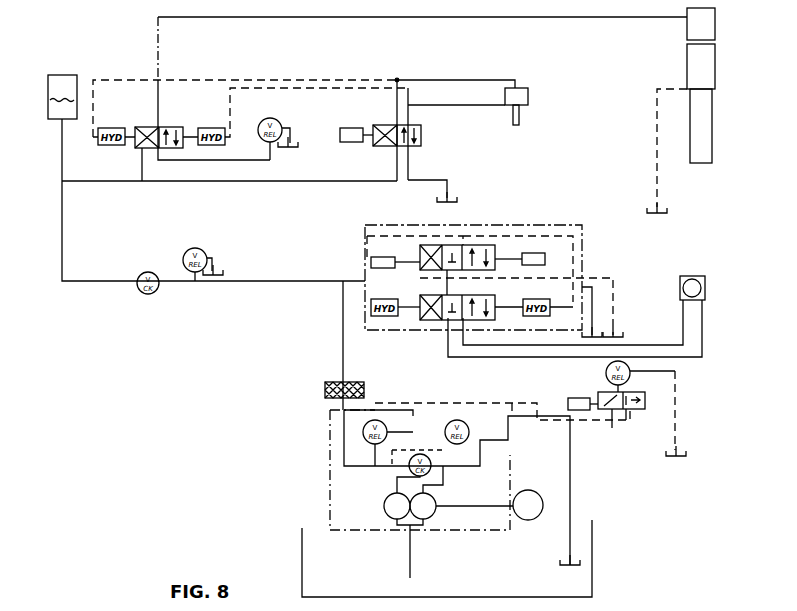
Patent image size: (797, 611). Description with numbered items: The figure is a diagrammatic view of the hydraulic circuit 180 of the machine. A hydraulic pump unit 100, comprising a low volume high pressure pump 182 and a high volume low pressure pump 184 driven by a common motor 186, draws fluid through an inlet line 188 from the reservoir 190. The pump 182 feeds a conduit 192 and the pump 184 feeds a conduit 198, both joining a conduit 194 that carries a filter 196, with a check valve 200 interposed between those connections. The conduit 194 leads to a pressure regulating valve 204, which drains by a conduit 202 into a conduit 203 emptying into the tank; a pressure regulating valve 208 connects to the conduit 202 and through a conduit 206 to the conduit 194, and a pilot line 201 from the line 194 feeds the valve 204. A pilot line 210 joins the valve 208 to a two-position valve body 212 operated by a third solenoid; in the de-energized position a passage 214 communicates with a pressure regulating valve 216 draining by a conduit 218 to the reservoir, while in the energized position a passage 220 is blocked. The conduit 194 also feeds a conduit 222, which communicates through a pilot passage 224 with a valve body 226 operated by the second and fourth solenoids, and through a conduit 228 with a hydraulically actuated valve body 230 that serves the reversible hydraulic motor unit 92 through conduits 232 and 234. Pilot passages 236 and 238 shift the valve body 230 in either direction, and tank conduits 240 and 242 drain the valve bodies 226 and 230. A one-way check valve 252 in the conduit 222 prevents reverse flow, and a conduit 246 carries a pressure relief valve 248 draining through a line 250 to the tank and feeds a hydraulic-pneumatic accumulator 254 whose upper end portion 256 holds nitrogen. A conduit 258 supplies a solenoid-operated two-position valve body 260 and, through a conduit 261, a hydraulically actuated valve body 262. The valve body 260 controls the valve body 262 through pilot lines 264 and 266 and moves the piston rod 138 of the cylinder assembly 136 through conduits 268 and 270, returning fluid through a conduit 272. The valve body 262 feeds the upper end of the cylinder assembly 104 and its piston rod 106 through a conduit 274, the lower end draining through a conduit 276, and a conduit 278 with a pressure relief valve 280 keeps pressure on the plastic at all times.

The reversible hydraulic motor unit 92 is at (705, 279).
The hydraulic pump unit 100 is at (330, 480).
The cylinder assembly 104 is at (716, 34).
The piston rod 106 is at (705, 116).
The hydraulic cylinder assembly 136 is at (530, 93).
The piston rod 138 is at (519, 115).
The hydraulic circuit 180 is at (204, 395).
The pump 182 is at (384, 504).
The pump 184 is at (435, 498).
The motor 186 is at (535, 490).
The inlet line 188 is at (412, 556).
The reservoir 190 is at (298, 147).
The conduit 192 is at (400, 480).
The conduit 194 is at (343, 349).
The filter 196 is at (357, 382).
The conduit 198 is at (445, 478).
The check valve 200 is at (431, 459).
The pilot line 201 is at (455, 450).
The conduit 202 is at (419, 451).
The conduit 203 is at (572, 460).
The pressure regulating valve 204 is at (469, 430).
The conduit 206 is at (362, 460).
The pressure regulating valve 208 is at (392, 439).
The pilot line 210 is at (440, 406).
The two-position valve body 212 is at (646, 394).
The passage 214 is at (646, 402).
The pressure regulating valve 216 is at (630, 366).
The conduit 218 is at (678, 393).
The passage 220 is at (615, 430).
The conduit 222 is at (352, 280).
The pilot passage 224 is at (438, 271).
The valve body 226 is at (508, 248).
The conduit 228 is at (438, 288).
The hydraulically actuated valve body 230 is at (508, 298).
The conduit 232 is at (637, 343).
The conduit 234 is at (703, 350).
The pilot passage 236 is at (418, 233).
The pilot passage 238 is at (527, 228).
The tank conduit 240 is at (613, 290).
The tank conduit 242 is at (597, 308).
The conduit 246 is at (62, 202).
The pressure relief valve 248 is at (207, 248).
The line 250 is at (215, 262).
The one-way check valve 252 is at (149, 296).
The hydraulic-pneumatic accumulator 254 is at (63, 75).
The upper end portion 256 is at (62, 92).
The conduit 258 is at (200, 182).
The two-position valve body 260 is at (422, 133).
The conduit 261 is at (142, 163).
The valve body 262 is at (170, 126).
The pilot line 264 is at (300, 79).
The pilot line 266 is at (312, 88).
The conduit 268 is at (472, 79).
The conduit 270 is at (455, 104).
The conduit 272 is at (412, 170).
The conduit 274 is at (420, 18).
The conduit 276 is at (660, 170).
The conduit 278 is at (244, 162).
The pressure relief valve 280 is at (266, 118).